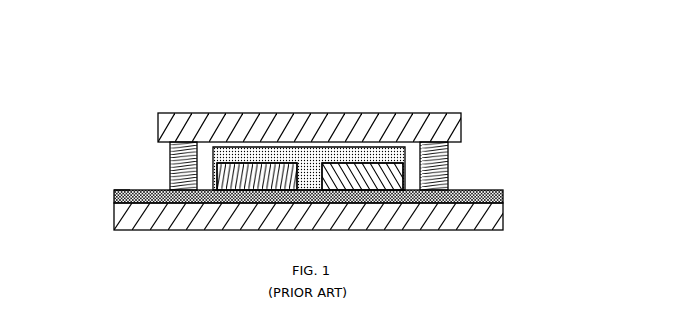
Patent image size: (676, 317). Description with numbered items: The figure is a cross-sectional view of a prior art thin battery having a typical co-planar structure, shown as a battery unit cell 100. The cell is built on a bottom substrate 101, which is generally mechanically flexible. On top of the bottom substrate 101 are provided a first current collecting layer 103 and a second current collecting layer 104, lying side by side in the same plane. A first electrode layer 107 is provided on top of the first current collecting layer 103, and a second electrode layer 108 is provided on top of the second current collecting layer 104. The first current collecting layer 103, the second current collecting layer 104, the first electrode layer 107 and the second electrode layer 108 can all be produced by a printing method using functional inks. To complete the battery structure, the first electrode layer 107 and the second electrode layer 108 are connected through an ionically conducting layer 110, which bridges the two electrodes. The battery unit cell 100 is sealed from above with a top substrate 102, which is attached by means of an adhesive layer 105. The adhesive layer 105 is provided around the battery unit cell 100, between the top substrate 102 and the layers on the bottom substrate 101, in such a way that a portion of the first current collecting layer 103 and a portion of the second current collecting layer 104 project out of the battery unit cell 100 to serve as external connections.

The battery unit cell 100 is at (199, 88).
The bottom substrate 101 is at (505, 217).
The top substrate 102 is at (461, 118).
The first current collecting layer 103 is at (505, 190).
The second current collecting layer 104 is at (119, 194).
The adhesive layer 105 is at (178, 163).
The first electrode layer 107 is at (370, 173).
The second electrode layer 108 is at (238, 172).
The ionically conducting layer 110 is at (313, 157).